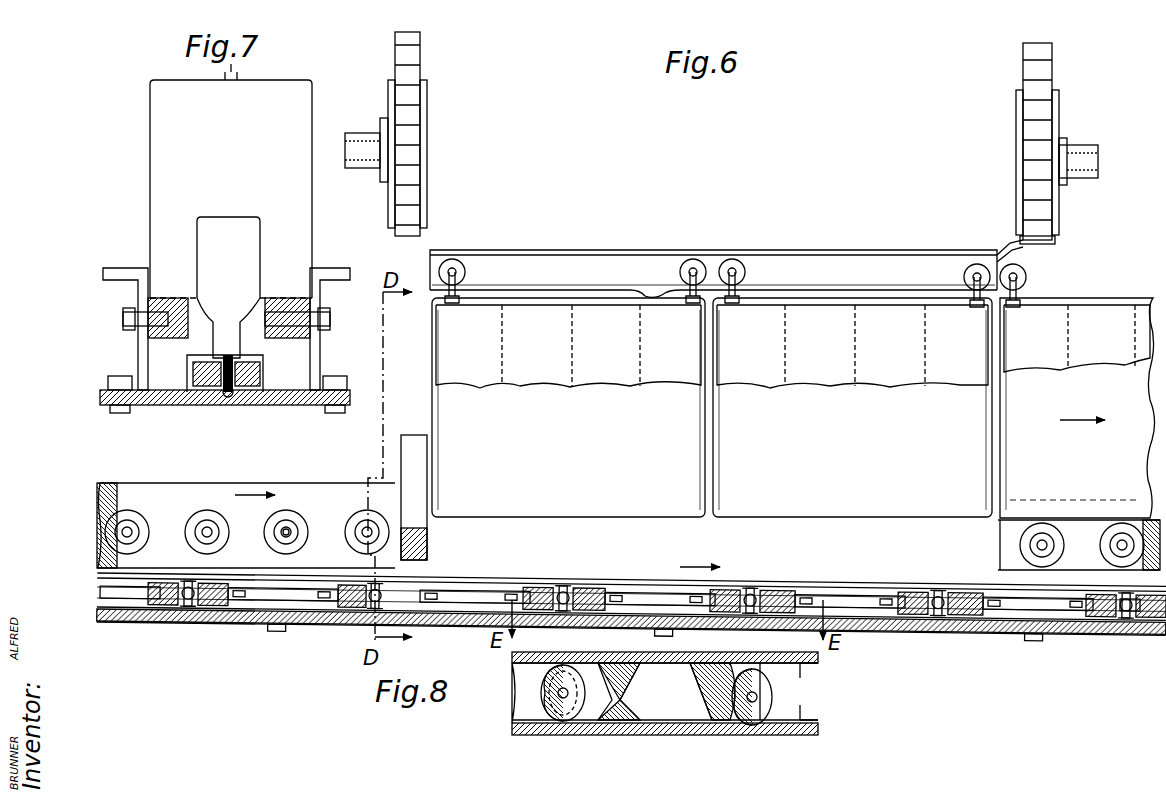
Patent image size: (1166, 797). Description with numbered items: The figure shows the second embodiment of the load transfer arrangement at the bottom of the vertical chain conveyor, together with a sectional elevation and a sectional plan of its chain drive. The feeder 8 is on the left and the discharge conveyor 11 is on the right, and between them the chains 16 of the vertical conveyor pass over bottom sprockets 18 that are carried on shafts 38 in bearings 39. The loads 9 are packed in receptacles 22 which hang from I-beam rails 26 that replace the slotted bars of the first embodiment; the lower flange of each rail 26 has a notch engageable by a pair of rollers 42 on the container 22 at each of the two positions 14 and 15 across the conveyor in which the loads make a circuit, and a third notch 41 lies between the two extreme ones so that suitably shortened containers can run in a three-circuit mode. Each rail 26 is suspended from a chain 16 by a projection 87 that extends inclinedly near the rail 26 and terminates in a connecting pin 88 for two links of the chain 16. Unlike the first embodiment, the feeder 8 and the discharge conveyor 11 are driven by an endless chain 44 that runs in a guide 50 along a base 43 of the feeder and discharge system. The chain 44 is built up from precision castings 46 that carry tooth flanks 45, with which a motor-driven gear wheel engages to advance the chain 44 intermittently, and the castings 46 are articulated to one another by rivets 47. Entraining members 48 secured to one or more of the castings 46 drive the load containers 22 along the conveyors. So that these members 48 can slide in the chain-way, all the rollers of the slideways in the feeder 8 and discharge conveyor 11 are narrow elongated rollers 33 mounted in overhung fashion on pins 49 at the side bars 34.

In FIG. 6, the feed conveyor 8 is at (245, 549).
In FIG. 6, the load 9 is at (580, 352).
In FIG. 6, the discharge conveyor 11 is at (1077, 535).
In FIG. 6, the first path 14 is at (569, 163).
In FIG. 6, the second path 15 is at (859, 163).
In FIG. 6, the chain 16 is at (420, 58).
In FIG. 6, the bottom sprocket 18 is at (427, 135).
In FIG. 7, the receptacle 22 is at (150, 100).
In FIG. 6, the receptacle 22 is at (1110, 300).
In FIG. 6, the I-beam rail 26 is at (715, 250).
In FIG. 7, the elongated roller 33 is at (180, 312).
In FIG. 6, the elongated roller 33 is at (208, 510).
In FIG. 7, the side bar 34 is at (118, 268).
In FIG. 6, the side bar 34 is at (146, 490).
In FIG. 6, the shaft 38 is at (1098, 162).
In FIG. 6, the bearing 39 is at (1078, 150).
In FIG. 6, the notch 41 is at (648, 290).
In FIG. 6, the roller 42 is at (465, 270).
In FIG. 7, the base 43 is at (300, 400).
In FIG. 6, the base 43 is at (238, 622).
In FIG. 7, the endless chain 44 is at (235, 395).
In FIG. 6, the endless chain 44 is at (858, 585).
In FIG. 8, the tooth flank 45 is at (682, 672).
In FIG. 6, the precision casting 46 is at (600, 585).
In FIG. 8, the precision casting 46 is at (790, 690).
In FIG. 7, the rivet 47 is at (225, 397).
In FIG. 6, the rivet 47 is at (188, 608).
In FIG. 8, the rivet 47 is at (760, 700).
In FIG. 7, the entraining member 48 is at (238, 235).
In FIG. 6, the entraining member 48 is at (412, 450).
In FIG. 7, the pin 49 is at (150, 335).
In FIG. 6, the pin 49 is at (288, 520).
In FIG. 7, the guide 50 is at (190, 371).
In FIG. 6, the guide 50 is at (1150, 620).
In FIG. 6, the projection 87 is at (1003, 243).
In FIG. 6, the connecting pin 88 is at (1057, 242).